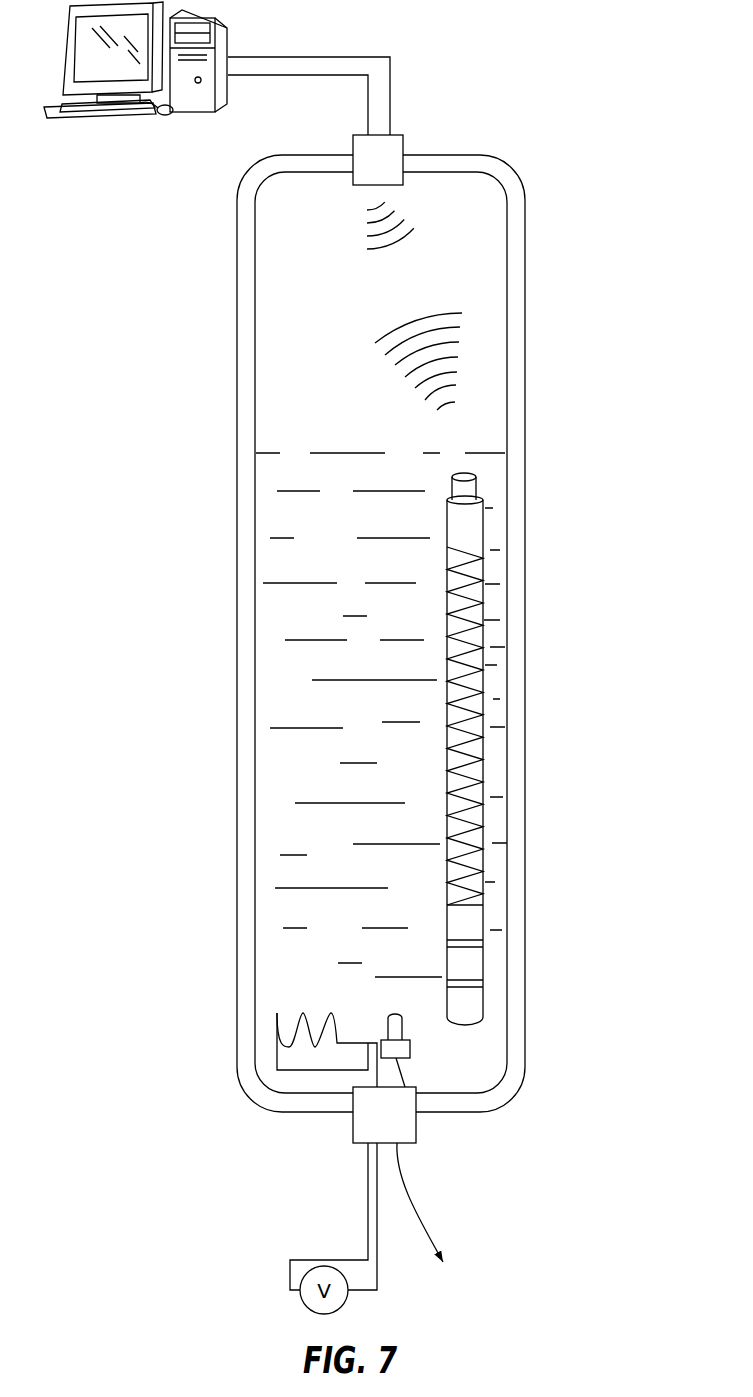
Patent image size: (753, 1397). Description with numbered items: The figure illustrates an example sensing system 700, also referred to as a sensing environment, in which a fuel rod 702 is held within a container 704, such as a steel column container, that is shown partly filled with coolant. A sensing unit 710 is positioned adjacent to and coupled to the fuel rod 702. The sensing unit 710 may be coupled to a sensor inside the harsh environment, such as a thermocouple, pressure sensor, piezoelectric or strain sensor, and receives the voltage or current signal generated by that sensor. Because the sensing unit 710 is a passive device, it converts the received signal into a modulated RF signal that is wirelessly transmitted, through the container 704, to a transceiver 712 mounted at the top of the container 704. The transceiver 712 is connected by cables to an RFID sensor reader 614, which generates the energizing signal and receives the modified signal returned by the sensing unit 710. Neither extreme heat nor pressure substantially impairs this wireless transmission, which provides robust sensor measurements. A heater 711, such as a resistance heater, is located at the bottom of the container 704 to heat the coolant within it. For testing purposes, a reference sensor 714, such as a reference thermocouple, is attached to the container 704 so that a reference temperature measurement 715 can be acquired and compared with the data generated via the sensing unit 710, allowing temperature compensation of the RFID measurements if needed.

The sensing system 700 is at (607, 45).
The RFID sensor reader 614 is at (230, 45).
The transceiver 712 is at (404, 143).
The container 704 is at (516, 370).
The sensing unit 710 is at (479, 490).
The fuel rod 702 is at (485, 590).
The reference sensor 714 is at (384, 1017).
The heater 711 is at (277, 1027).
The reference temperature measurement 715 is at (414, 1205).